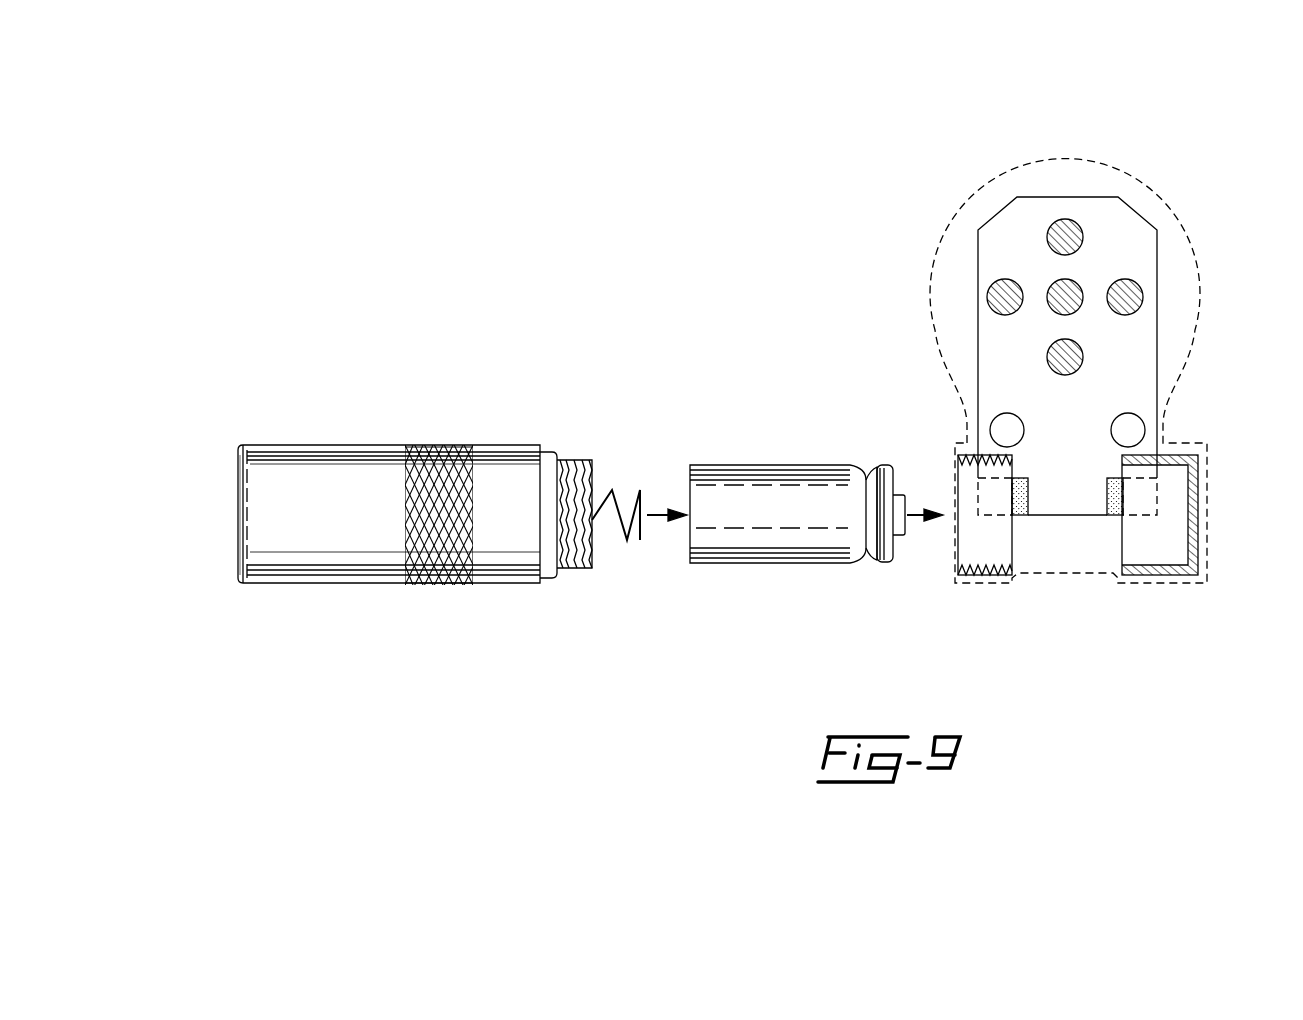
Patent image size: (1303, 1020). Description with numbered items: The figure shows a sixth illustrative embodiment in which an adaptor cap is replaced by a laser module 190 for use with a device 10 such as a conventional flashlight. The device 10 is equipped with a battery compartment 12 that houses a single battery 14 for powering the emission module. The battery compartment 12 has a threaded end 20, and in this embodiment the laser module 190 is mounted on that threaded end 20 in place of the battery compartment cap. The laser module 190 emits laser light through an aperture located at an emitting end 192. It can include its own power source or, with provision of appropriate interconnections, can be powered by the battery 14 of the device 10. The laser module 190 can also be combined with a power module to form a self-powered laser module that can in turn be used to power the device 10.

The device 10 is at (1187, 213).
The battery compartment 12 is at (1158, 585).
The battery 14 is at (790, 543).
The threaded end 20 is at (977, 555).
The laser module 190 is at (333, 445).
The emitting end 192 is at (237, 492).